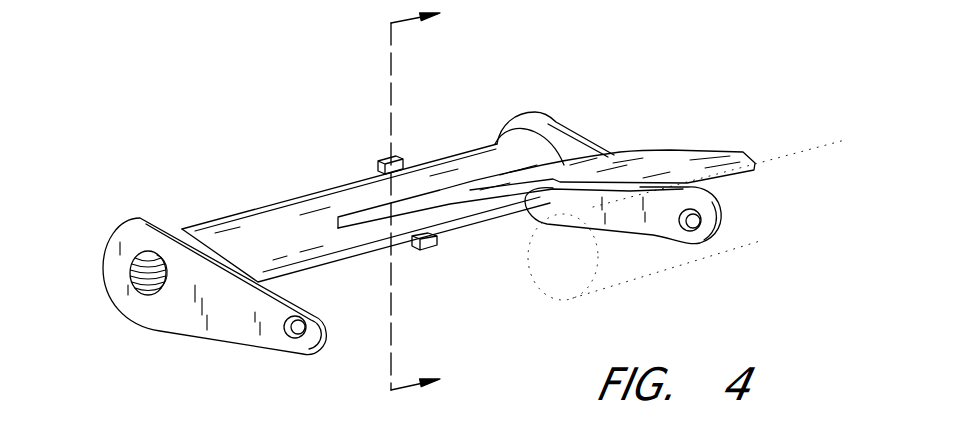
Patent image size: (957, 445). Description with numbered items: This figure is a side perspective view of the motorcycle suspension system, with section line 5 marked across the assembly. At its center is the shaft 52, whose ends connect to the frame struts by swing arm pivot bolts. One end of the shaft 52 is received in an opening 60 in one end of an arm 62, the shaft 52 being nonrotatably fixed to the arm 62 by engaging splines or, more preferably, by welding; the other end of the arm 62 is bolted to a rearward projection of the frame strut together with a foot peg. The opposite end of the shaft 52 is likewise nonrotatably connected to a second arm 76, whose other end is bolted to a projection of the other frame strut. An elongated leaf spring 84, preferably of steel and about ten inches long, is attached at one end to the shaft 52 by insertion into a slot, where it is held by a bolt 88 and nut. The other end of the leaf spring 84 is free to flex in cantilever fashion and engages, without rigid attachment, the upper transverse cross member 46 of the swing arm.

The section line 5- 5 is at (415, 201).
The upper transverse cross member 46 is at (843, 138).
The shaft 52 is at (250, 223).
The opening 60 is at (126, 270).
The arm 62 is at (232, 328).
The arm 76 is at (655, 228).
The leaf spring 84 is at (655, 157).
The bolt 88 is at (383, 157).